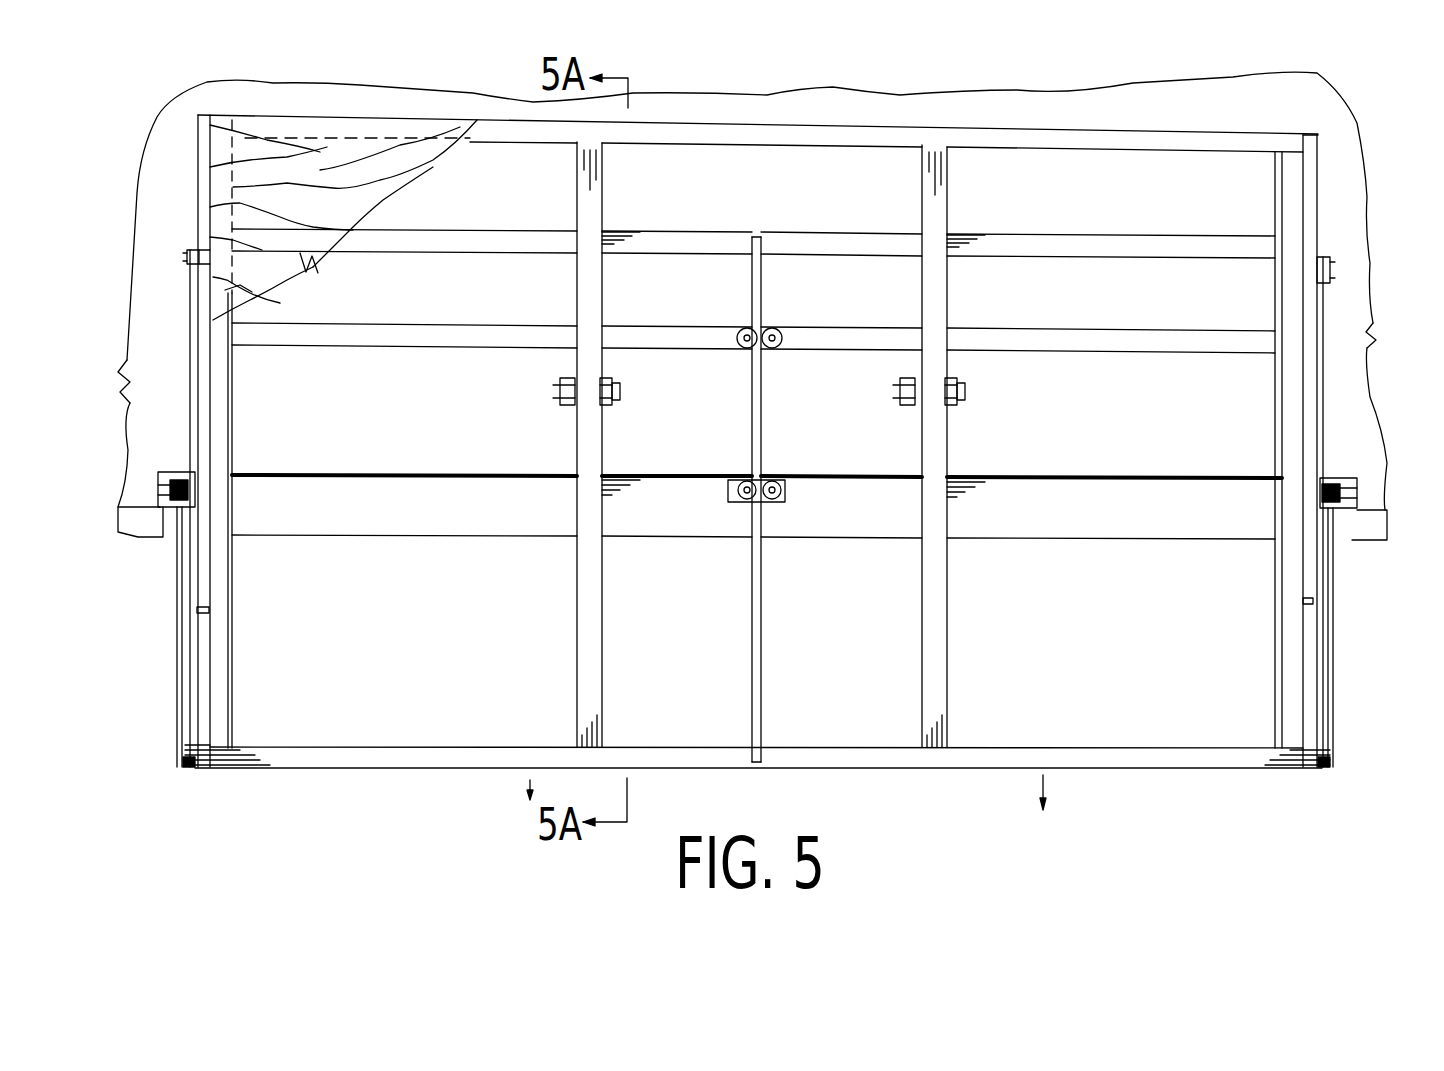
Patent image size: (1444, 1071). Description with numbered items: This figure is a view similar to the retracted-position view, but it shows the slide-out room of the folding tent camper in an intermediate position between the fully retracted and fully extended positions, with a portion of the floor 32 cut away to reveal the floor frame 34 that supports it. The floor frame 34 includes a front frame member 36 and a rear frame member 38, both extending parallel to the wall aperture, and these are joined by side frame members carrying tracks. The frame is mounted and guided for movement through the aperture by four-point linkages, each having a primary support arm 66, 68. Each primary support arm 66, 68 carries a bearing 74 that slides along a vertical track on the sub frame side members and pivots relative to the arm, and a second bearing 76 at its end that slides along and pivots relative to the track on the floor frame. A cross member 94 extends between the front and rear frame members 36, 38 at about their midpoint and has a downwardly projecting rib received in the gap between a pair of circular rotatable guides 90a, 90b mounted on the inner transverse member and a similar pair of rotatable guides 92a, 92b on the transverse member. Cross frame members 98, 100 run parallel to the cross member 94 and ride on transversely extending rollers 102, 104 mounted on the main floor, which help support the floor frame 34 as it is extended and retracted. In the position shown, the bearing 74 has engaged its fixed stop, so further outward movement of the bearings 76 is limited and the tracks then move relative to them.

The floor 32 is at (325, 170).
The floor frame 34 is at (1068, 128).
The front frame member 36 is at (955, 762).
The rear frame member 38 is at (768, 137).
The primary support arm 66 is at (1315, 630).
The primary support arm 68 is at (180, 597).
The bearing 74 is at (165, 470).
The second bearing 76 is at (228, 748).
The rotatable guide 90a is at (740, 327).
The rotatable guide 90b is at (776, 327).
The rotatable guide 92a is at (740, 478).
The rotatable guide 92b is at (777, 478).
The cross member 94 is at (758, 650).
The cross frame member 98 is at (580, 645).
The cross frame member 100 is at (940, 628).
The roller 102 is at (620, 388).
The roller 104 is at (965, 388).